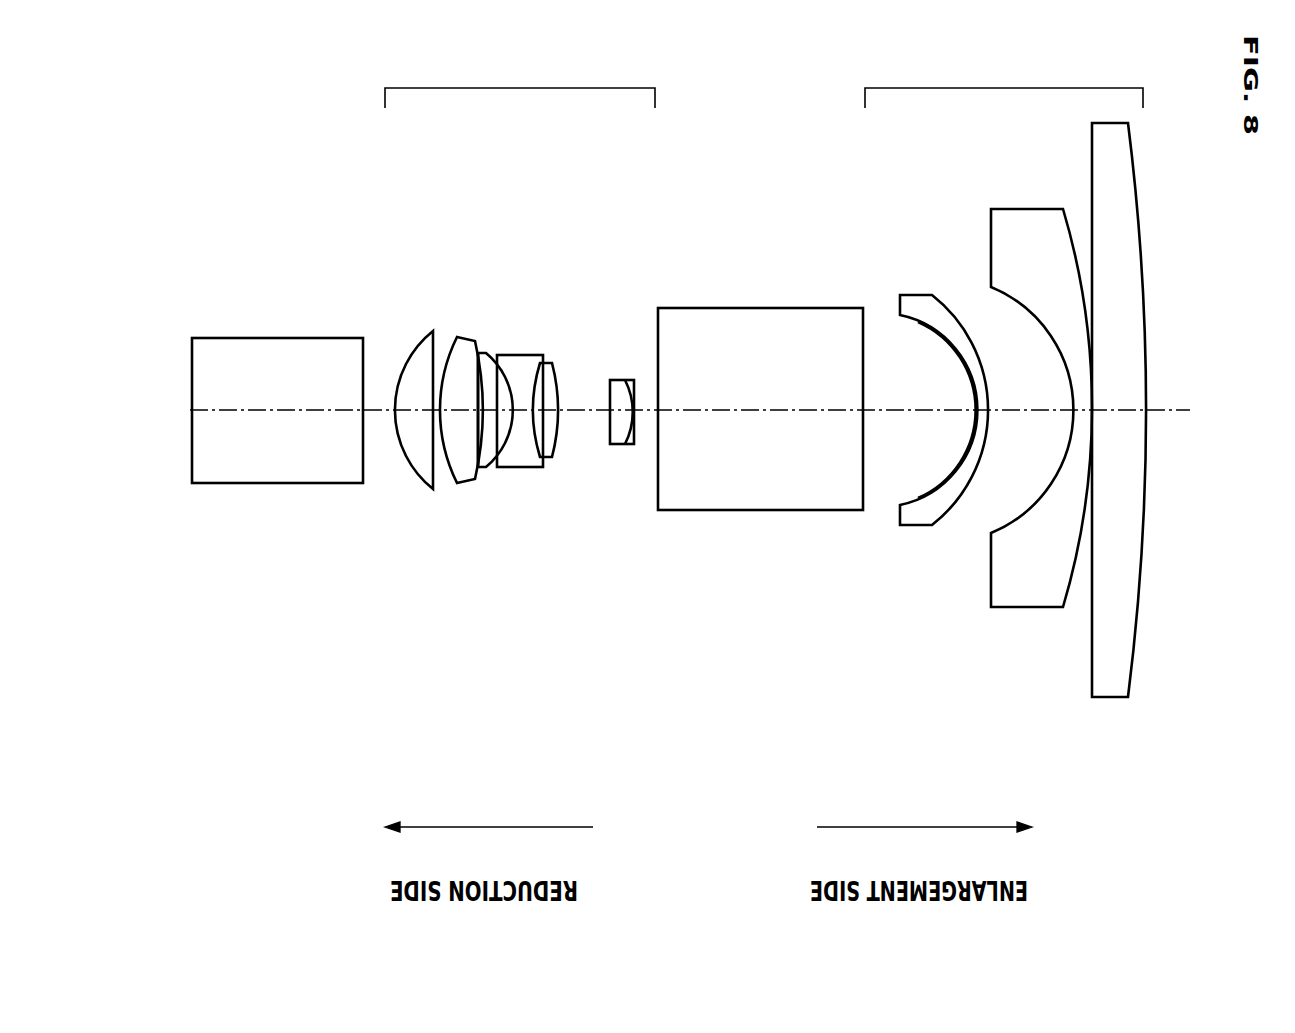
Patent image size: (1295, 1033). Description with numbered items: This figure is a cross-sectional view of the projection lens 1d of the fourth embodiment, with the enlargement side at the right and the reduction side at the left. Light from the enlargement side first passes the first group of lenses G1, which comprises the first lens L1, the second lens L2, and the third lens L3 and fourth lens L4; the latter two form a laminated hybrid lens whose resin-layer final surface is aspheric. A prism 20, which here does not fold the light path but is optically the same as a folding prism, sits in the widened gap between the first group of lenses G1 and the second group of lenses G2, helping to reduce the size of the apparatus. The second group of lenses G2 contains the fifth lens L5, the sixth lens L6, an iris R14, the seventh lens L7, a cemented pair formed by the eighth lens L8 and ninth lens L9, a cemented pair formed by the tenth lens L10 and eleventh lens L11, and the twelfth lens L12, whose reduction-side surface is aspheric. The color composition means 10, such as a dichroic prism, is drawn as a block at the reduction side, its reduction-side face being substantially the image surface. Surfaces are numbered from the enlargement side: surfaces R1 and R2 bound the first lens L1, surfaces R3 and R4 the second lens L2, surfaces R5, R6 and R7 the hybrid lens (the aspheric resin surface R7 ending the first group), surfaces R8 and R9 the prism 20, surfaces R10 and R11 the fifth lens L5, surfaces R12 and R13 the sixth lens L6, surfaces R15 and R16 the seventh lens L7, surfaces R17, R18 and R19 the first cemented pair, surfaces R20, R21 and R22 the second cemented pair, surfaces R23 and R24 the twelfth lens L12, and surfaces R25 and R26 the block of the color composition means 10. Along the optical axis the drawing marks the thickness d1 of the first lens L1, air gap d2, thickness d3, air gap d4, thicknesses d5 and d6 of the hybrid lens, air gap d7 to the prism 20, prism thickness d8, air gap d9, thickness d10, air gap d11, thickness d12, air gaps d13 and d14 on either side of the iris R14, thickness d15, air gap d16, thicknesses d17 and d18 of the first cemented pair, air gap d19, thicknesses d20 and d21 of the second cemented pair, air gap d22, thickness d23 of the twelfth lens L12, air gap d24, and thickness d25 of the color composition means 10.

The projection lens 1d is at (417, 686).
The color composition means 10 is at (222, 338).
The prism 20 is at (760, 510).
The first group of lenses G1 is at (1004, 84).
The second group of lenses G2 is at (520, 84).
The first lens L1 is at (1092, 162).
The second lens L2 is at (1012, 216).
The third lens L3 is at (919, 300).
The fourth lens L4 is at (930, 333).
The fifth lens L5 is at (630, 378).
The sixth lens L6 is at (610, 378).
The seventh lens L7 is at (550, 367).
The eighth lens L8 is at (531, 355).
The ninth lens L9 is at (482, 365).
The tenth lens L10 is at (480, 355).
The eleventh lens L11 is at (457, 337).
The twelfth lens L12 is at (431, 341).
The first lens surface R1 is at (1135, 668).
The second lens surface R2 is at (1092, 680).
The third lens surface R3 is at (1068, 592).
The fourth lens surface R4 is at (990, 515).
The fifth lens surface R5 is at (955, 497).
The sixth lens surface R6 is at (925, 490).
The seventh lens surface R7 is at (898, 490).
The eighth surface R8 is at (870, 498).
The ninth surface R9 is at (648, 450).
The tenth lens surface R10 is at (637, 446).
The eleventh lens surface R11 is at (630, 447).
The twelfth lens surface R12 is at (622, 447).
The thirteenth lens surface R13 is at (613, 450).
The iris R14 is at (605, 445).
The fifteenth lens surface R15 is at (593, 445).
The sixteenth lens surface R16 is at (548, 462).
The seventeenth lens surface R17 is at (540, 470).
The eighteenth lens surface R18 is at (492, 472).
The nineteenth lens surface R19 is at (488, 472).
The twentieth lens surface R20 is at (475, 500).
The twenty-first lens surface R21 is at (440, 472).
The twenty-second lens surface R22 is at (425, 478).
The twenty-third lens surface R23 is at (425, 472).
The twenty-fourth lens surface R24 is at (399, 472).
The twenty-fifth surface R25 is at (362, 483).
The twenty-sixth surface R26 is at (192, 480).
The central thickness d1 is at (1118, 430).
The air gap d2 is at (1098, 405).
The central thickness d3 is at (1150, 455).
The air gap d4 is at (1025, 430).
The central thickness d5 is at (990, 458).
The central thickness d6 is at (985, 395).
The air gap d7 is at (920, 430).
The central thickness d8 is at (763, 430).
The air gap d9 is at (660, 330).
The central thickness d10 is at (640, 378).
The air gap d11 is at (652, 450).
The central thickness d12 is at (621, 378).
The air gap d13 is at (608, 378).
The air gap d14 is at (604, 437).
The central thickness d15 is at (604, 386).
The air gap d16 is at (548, 380).
The central thickness d17 is at (553, 367).
The central thickness d18 is at (503, 357).
The air gap d19 is at (493, 390).
The central thickness d20 is at (445, 375).
The central thickness d21 is at (420, 385).
The air gap d22 is at (432, 392).
The central thickness d23 is at (432, 430).
The air gap d24 is at (372, 395).
The central thickness d25 is at (278, 430).